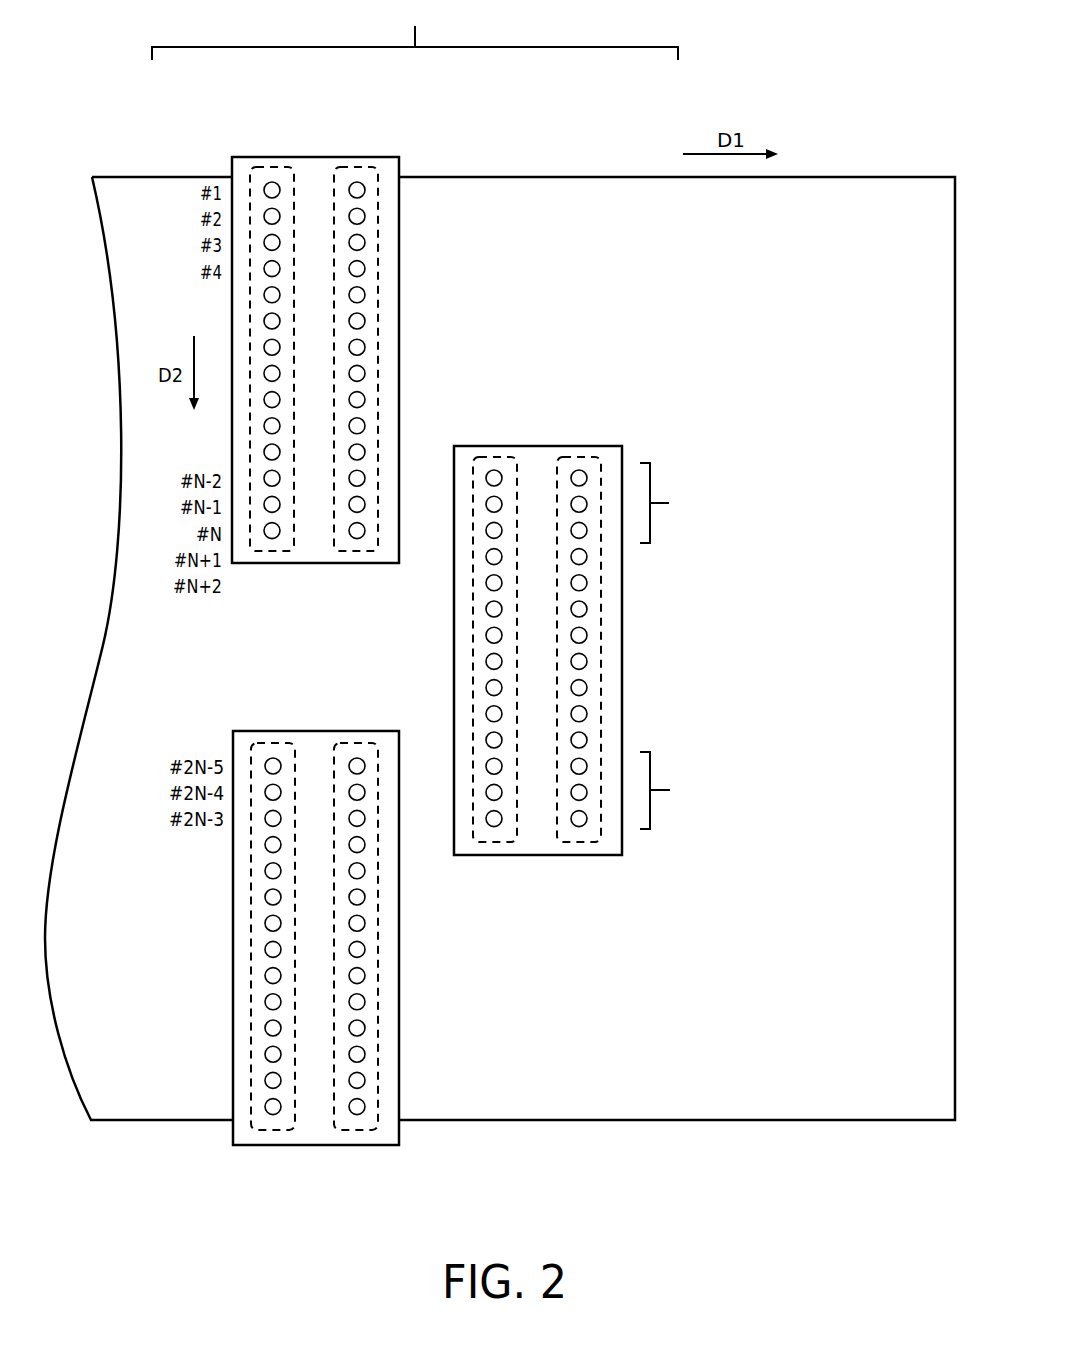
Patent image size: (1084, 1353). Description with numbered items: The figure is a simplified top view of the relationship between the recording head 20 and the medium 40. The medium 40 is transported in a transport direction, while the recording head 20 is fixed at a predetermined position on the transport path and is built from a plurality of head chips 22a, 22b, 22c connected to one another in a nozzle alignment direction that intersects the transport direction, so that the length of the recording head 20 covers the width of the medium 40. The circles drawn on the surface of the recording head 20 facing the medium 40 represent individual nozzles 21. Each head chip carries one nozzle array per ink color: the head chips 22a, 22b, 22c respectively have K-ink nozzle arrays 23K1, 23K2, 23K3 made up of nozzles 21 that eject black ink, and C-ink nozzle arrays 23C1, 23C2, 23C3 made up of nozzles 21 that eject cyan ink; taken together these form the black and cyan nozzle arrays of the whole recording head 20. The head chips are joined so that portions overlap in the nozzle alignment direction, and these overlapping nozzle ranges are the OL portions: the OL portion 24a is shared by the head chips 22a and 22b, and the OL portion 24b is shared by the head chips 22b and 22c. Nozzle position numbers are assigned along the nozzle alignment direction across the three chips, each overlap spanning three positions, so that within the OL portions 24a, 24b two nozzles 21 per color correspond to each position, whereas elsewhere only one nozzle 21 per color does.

The recording head 20 is at (415, 30).
The nozzle 21 is at (265, 187).
The head chip 22a is at (390, 157).
The head chip 22b is at (602, 446).
The head chip 22c is at (325, 731).
The K-ink nozzle array 23K1 is at (275, 167).
The C-ink nozzle array 23C1 is at (361, 167).
The K-ink nozzle array 23K2 is at (489, 457).
The C-ink nozzle array 23C2 is at (576, 457).
The K-ink nozzle array 23K3 is at (274, 1130).
The C-ink nozzle array 23C3 is at (358, 1130).
The OL portion 24a is at (679, 503).
The OL portion 24b is at (680, 790).
The medium 40 is at (825, 176).